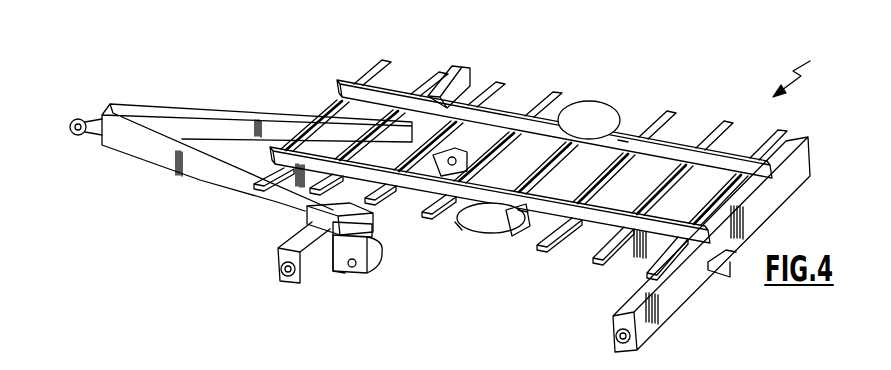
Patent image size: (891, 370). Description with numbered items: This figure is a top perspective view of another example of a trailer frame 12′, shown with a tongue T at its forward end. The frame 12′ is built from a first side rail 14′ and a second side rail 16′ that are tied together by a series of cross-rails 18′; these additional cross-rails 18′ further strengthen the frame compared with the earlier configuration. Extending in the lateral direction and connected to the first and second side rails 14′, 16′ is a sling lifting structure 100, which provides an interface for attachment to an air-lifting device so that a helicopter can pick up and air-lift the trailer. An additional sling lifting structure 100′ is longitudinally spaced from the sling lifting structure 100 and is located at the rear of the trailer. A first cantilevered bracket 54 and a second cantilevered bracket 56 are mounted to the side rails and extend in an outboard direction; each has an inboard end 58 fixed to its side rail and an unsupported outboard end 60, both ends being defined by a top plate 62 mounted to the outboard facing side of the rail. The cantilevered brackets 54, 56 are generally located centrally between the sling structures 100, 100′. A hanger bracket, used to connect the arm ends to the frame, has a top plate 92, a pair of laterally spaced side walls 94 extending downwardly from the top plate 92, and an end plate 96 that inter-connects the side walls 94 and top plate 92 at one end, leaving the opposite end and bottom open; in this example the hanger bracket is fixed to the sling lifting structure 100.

The tongue T is at (113, 143).
The trailer frame 12′ is at (807, 72).
The first side rail 14′ is at (725, 158).
The second side rail 16′ is at (637, 250).
The cross-rails 18′ is at (546, 92).
The first cantilevered bracket 54 is at (602, 123).
The second cantilevered bracket 56 is at (502, 223).
The inboard end 58 is at (623, 137).
The outboard end 60 is at (603, 130).
The top plate 62 is at (568, 100).
The top plate 92 is at (318, 229).
The side walls 94 is at (357, 267).
The end plate 96 is at (327, 263).
The sling lifting structure 100 is at (278, 248).
The additional sling lifting structure 100′ is at (802, 172).